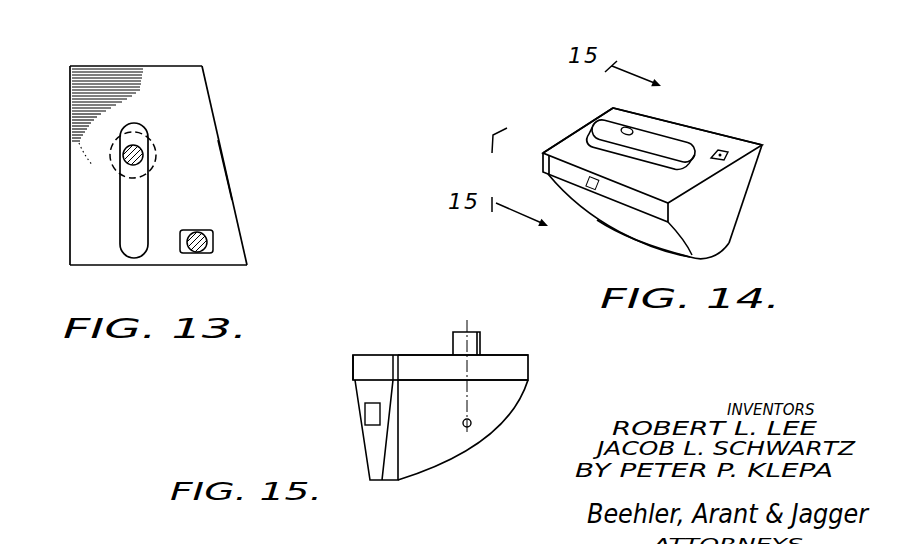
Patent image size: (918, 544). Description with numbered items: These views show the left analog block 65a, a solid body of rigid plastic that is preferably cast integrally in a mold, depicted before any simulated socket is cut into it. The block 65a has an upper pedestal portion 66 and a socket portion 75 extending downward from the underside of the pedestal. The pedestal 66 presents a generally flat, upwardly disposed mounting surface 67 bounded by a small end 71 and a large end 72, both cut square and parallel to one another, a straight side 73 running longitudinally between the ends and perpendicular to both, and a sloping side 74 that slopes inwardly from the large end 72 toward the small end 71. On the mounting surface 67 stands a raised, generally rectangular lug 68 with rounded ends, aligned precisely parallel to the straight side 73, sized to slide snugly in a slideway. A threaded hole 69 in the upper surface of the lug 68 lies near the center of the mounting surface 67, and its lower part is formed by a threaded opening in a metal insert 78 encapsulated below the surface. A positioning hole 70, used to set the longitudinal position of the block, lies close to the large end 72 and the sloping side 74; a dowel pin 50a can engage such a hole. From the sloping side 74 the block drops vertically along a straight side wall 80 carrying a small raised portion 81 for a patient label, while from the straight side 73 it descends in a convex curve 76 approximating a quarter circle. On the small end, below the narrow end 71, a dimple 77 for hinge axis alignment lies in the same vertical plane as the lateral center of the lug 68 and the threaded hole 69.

In FIG. 13, the analog block 65a is at (222, 74).
In FIG. 14, the analog block 65a is at (745, 90).
In FIG. 15, the analog block 65a is at (346, 446).
In FIG. 13, the pedestal portion 66 is at (236, 175).
In FIG. 14, the pedestal portion 66 is at (740, 168).
In FIG. 15, the pedestal portion 66 is at (349, 369).
In FIG. 13, the mounting surface 67 is at (75, 247).
In FIG. 14, the mounting surface 67 is at (577, 143).
In FIG. 15, the mounting surface 67 is at (500, 352).
In FIG. 13, the lug 68 is at (123, 213).
In FIG. 14, the lug 68 is at (653, 143).
In FIG. 15, the lug 68 is at (453, 340).
In FIG. 14, the threaded hole 69 is at (628, 131).
In FIG. 13, the positioning hole 70 is at (213, 241).
In FIG. 14, the positioning hole 70 is at (722, 156).
In FIG. 13, the small end 71 is at (133, 66).
In FIG. 14, the small end 71 is at (593, 123).
In FIG. 15, the small end 71 is at (487, 372).
In FIG. 13, the large end 72 is at (98, 266).
In FIG. 14, the large end 72 is at (713, 187).
In FIG. 13, the straight side 73 is at (70, 158).
In FIG. 15, the straight side 73 is at (530, 363).
In FIG. 13, the sloping side 74 is at (226, 148).
In FIG. 14, the sloping side 74 is at (733, 141).
In FIG. 15, the sloping side 74 is at (367, 362).
In FIG. 14, the socket portion 75 is at (717, 234).
In FIG. 14, the convex curve 76 is at (657, 237).
In FIG. 15, the convex curve 76 is at (457, 462).
In FIG. 15, the dimple 77 is at (470, 426).
In FIG. 13, the metal insert 78 is at (117, 170).
In FIG. 13, the dowel pin 50a is at (193, 233).
In FIG. 15, the side wall 80 is at (368, 392).
In FIG. 15, the raised portion 81 is at (367, 413).